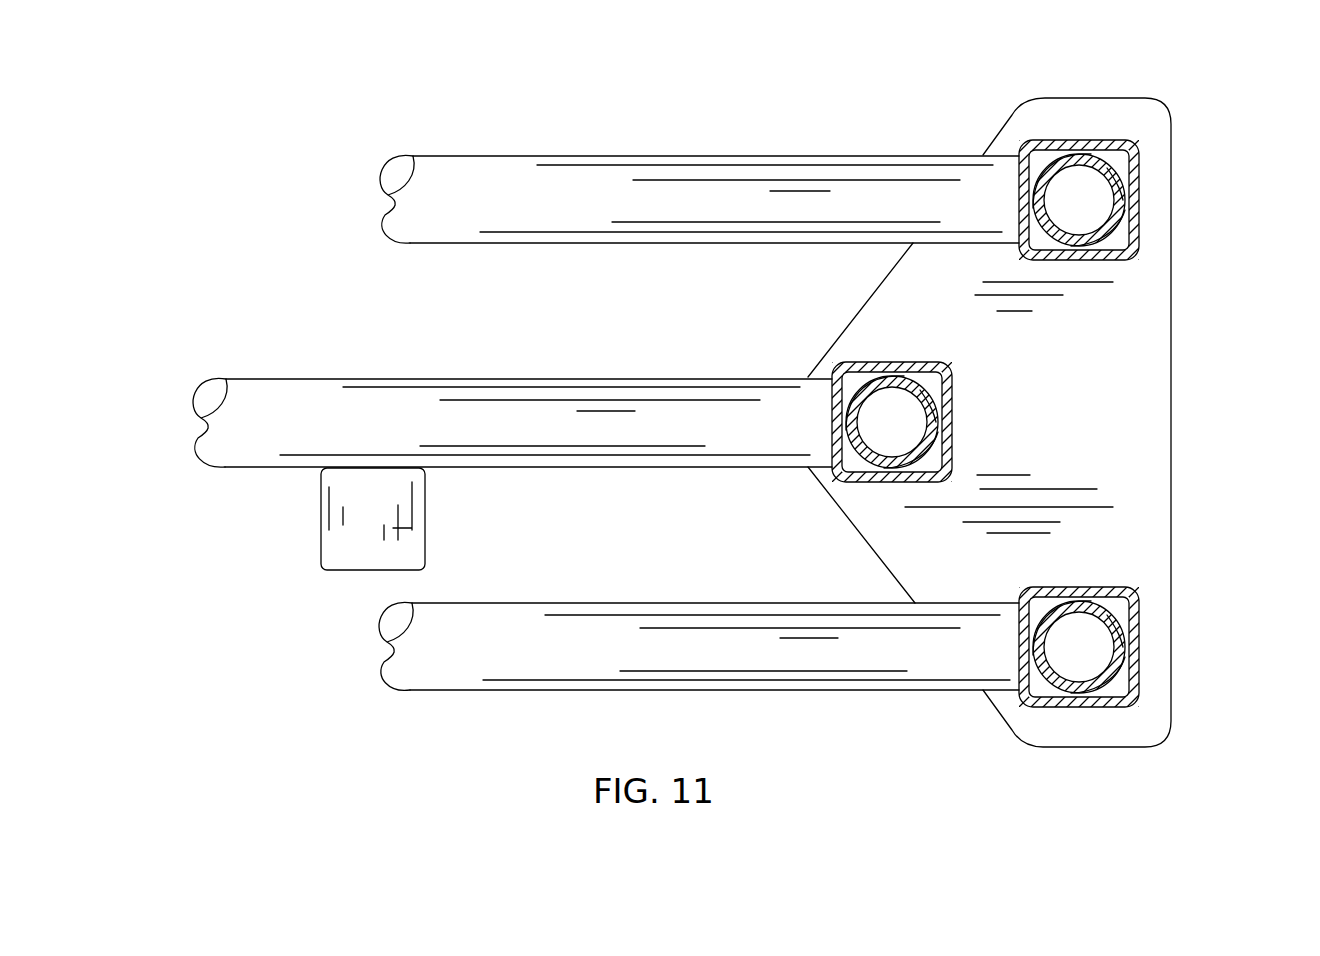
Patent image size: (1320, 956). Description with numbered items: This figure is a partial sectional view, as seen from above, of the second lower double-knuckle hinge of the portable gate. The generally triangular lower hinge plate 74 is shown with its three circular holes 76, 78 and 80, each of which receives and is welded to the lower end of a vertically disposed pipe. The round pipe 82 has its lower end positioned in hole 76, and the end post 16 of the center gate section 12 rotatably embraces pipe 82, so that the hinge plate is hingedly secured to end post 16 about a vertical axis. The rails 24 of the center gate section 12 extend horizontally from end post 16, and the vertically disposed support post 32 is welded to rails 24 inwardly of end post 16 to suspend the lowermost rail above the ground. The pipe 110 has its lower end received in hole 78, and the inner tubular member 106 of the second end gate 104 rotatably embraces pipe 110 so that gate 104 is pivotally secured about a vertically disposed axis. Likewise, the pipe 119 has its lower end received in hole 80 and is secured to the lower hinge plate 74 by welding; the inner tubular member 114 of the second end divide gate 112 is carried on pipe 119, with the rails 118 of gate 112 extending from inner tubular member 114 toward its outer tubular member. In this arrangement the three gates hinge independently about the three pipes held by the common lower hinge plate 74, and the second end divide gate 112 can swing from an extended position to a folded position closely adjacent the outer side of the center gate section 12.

The center gate section 12 is at (512, 366).
The end post 16 is at (892, 408).
The rails 24 is at (352, 437).
The support post 32 is at (395, 528).
The lower hinge plate 74 is at (1203, 395).
The hole 76 is at (892, 408).
The hole 78 is at (1088, 625).
The hole 80 is at (1079, 200).
The round pipe 82 is at (909, 422).
The second end gate 104 is at (723, 596).
The inner tubular member 106 is at (1088, 647).
The pipe 110 is at (1102, 625).
The second end divide gate 112 is at (699, 138).
The inner tubular member 114 is at (1079, 200).
The rails 118 is at (520, 214).
The pipe 119 is at (1100, 200).